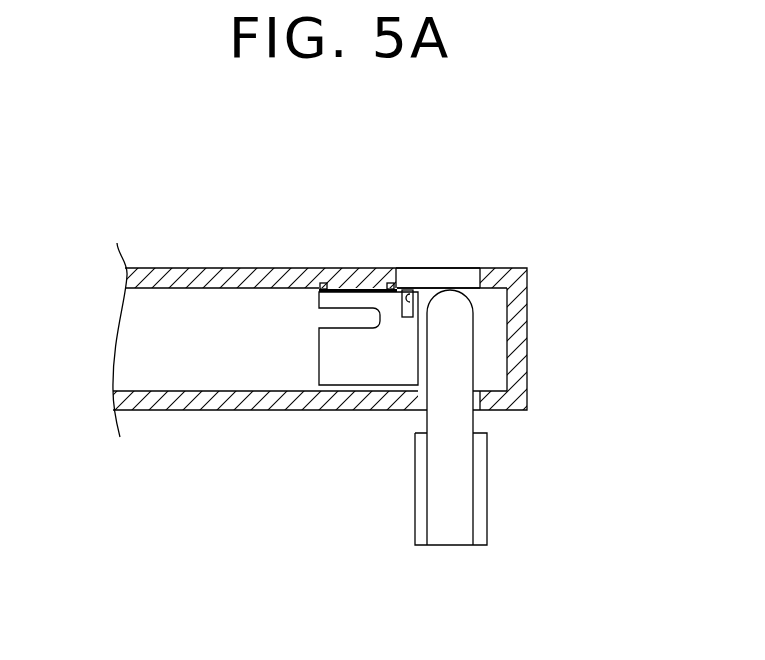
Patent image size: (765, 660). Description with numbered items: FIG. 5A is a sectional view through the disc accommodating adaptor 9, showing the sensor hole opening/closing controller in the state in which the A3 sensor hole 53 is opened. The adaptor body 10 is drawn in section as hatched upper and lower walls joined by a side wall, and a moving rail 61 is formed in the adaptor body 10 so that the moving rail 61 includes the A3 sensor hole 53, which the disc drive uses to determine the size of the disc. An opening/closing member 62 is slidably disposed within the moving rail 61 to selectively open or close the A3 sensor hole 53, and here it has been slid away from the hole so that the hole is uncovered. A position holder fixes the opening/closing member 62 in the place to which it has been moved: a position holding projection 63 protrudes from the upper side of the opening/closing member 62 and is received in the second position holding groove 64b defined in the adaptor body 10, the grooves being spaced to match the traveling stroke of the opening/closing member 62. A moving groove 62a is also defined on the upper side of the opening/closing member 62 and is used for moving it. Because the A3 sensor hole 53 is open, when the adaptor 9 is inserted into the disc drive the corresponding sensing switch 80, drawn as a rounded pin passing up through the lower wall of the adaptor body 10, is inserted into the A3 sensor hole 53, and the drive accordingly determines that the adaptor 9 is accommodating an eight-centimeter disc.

The adaptor 9 is at (48, 350).
The adaptor body 10 is at (227, 418).
The A3 sensor hole 53 is at (470, 268).
The moving rail 61 is at (483, 338).
The opening/closing member 62 is at (347, 268).
The moving groove 62a is at (440, 268).
The position holding projection 63 is at (315, 268).
The second position holding groove 64b is at (382, 268).
The sensing switch 80 is at (483, 512).